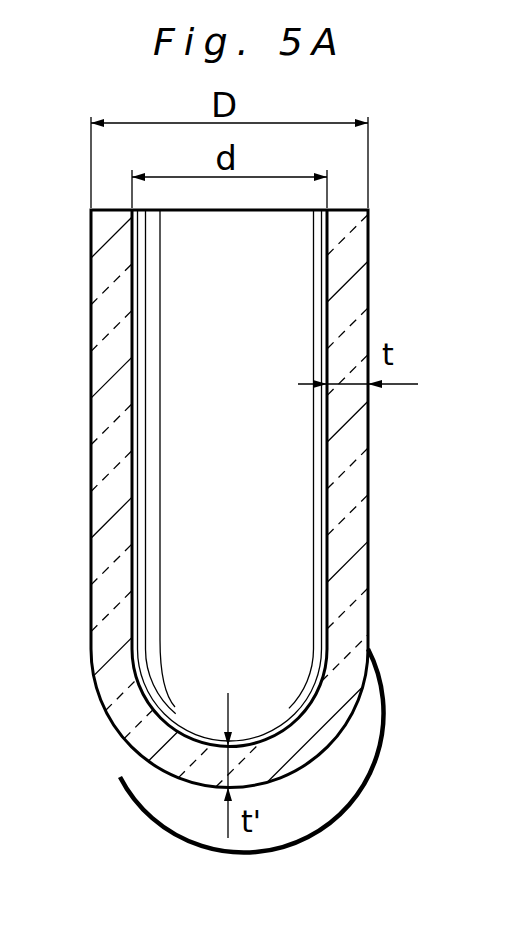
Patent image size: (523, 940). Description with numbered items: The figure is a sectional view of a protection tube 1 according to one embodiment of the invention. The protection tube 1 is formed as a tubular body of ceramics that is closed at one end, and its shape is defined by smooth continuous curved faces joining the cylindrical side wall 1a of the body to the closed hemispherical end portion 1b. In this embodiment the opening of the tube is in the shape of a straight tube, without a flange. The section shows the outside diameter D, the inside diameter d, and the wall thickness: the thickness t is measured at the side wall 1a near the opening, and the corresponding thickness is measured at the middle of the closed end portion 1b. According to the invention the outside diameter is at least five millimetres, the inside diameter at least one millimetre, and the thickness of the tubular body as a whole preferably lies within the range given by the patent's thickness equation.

The protection tube 1 is at (256, 512).
The side wall 1a is at (102, 369).
The closed end portion 1b is at (320, 740).